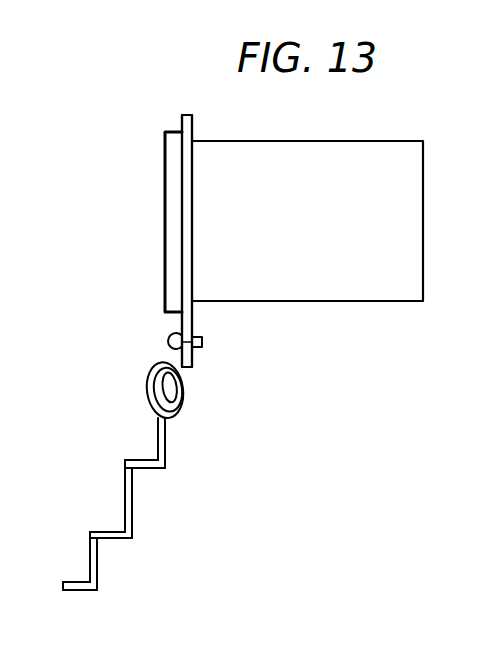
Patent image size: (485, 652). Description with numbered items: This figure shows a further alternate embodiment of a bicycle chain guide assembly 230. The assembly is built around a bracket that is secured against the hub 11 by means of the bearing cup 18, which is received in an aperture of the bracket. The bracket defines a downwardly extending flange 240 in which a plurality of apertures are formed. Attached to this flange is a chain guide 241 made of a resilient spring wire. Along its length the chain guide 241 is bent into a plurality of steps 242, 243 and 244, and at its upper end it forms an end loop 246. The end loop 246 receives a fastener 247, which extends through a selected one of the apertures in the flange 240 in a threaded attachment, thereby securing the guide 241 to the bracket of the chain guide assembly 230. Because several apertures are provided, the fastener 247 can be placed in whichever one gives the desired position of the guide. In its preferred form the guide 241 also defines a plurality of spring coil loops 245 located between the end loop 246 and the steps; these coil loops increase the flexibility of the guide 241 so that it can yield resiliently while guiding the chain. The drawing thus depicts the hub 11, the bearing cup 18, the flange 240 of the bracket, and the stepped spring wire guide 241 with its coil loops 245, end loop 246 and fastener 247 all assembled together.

The hub 11 is at (382, 157).
The bearing cup 18 is at (163, 149).
The chain guide assembly 230 is at (196, 317).
The downwardly extending flange 240 is at (196, 367).
The chain guide 241 is at (166, 448).
The step 242 is at (136, 457).
The step 243 is at (109, 530).
The step 244 is at (78, 576).
The spring coil loops 245 is at (150, 399).
The end loop 246 is at (176, 322).
The fastener 247 is at (166, 337).